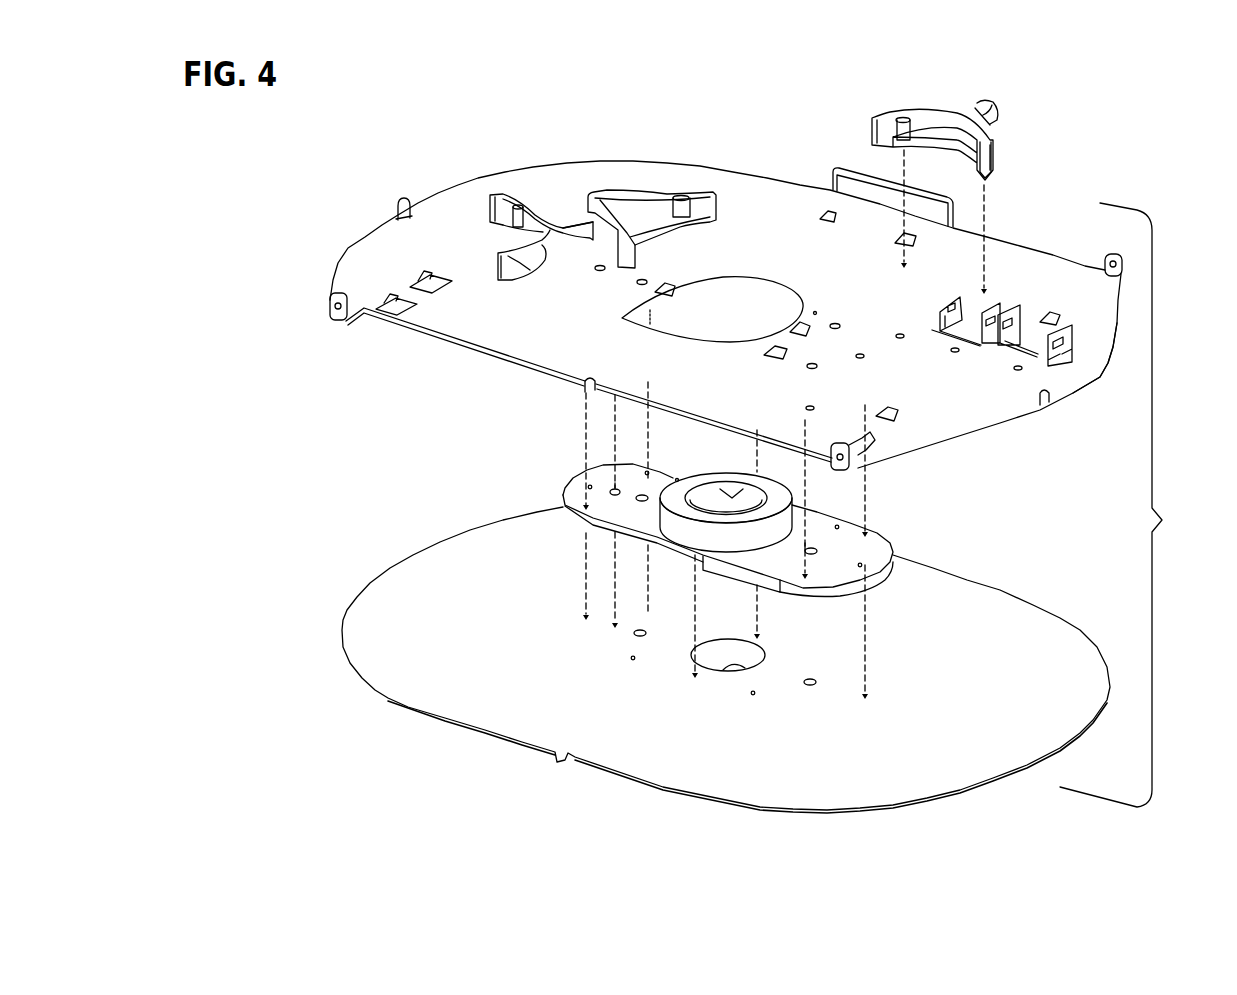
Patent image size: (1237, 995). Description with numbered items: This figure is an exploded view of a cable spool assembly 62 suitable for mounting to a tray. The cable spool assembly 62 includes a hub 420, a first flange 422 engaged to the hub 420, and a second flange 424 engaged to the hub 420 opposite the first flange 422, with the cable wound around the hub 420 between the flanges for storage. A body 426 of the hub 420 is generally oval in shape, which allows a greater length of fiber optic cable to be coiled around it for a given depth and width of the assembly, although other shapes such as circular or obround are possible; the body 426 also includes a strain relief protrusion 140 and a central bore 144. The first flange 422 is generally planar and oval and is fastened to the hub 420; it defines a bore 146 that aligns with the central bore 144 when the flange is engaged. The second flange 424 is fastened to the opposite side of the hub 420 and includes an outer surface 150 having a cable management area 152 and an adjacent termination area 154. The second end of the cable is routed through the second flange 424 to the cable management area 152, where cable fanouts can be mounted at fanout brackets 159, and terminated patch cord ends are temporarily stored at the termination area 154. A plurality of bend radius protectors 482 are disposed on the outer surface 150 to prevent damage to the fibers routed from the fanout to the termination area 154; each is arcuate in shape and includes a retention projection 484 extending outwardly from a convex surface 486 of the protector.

The cable spool assembly 62 is at (1136, 505).
The strain relief protrusion 140 is at (769, 483).
The central bore 144 is at (731, 496).
The bore 146 is at (745, 672).
The outer surface 150 is at (874, 380).
The cable management area 152 is at (756, 206).
The termination area 154 is at (514, 339).
The fanout brackets 159 is at (1020, 312).
The hub 420 is at (904, 544).
The first flange 422 is at (1010, 590).
The second flange 424 is at (1099, 379).
The body 426 is at (660, 552).
The bend radius protectors 482 is at (540, 201).
The retention projection 484 is at (562, 233).
The convex surface 486 is at (513, 268).